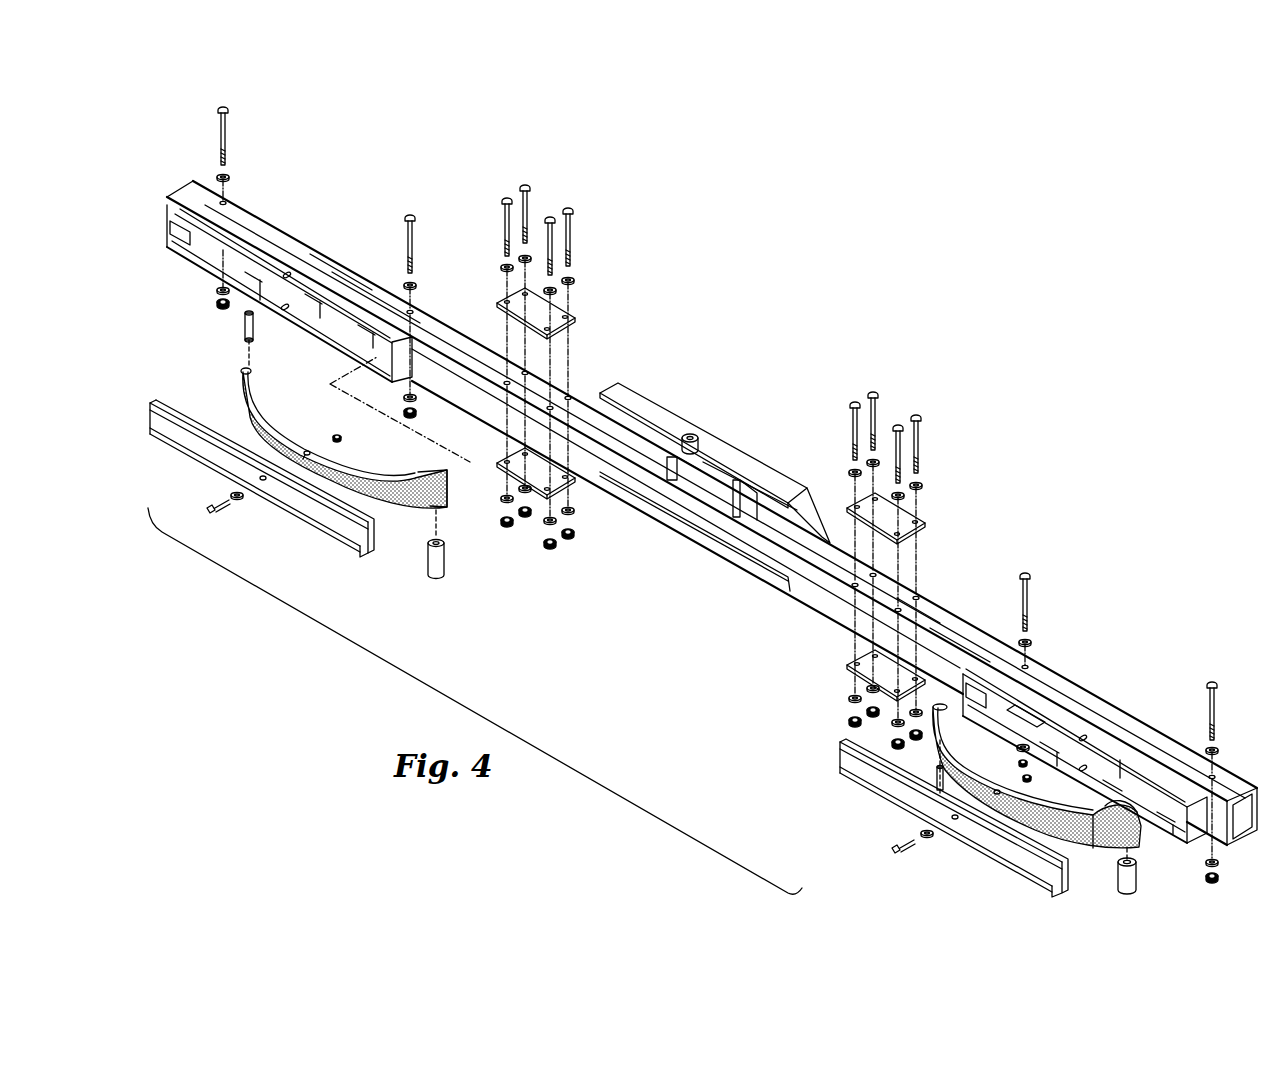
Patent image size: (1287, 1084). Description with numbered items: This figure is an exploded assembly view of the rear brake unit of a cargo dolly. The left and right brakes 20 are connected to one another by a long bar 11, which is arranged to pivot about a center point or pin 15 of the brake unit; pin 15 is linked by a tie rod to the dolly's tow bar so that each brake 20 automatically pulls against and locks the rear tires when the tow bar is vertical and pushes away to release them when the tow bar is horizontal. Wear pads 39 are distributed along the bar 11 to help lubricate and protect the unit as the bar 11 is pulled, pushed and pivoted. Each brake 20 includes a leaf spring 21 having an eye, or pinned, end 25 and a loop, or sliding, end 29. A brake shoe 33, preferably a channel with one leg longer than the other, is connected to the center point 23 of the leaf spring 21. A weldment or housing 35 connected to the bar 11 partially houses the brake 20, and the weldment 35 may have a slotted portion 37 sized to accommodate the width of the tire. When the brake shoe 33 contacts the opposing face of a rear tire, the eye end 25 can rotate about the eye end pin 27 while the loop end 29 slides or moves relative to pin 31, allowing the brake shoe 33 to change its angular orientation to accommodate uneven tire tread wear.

The bar 11 is at (948, 610).
The pin 15 is at (700, 434).
The brake 20 is at (404, 619).
The leaf spring 21 is at (267, 443).
The center point 23 is at (307, 455).
The eye end 25 is at (240, 367).
The eye end pin 27 is at (240, 326).
The loop end 29 is at (448, 508).
The pin 31 is at (427, 575).
The brake shoe 33 is at (328, 518).
The weldment 35 is at (1070, 730).
The slotted portion 37 is at (1027, 713).
The wear pads 39 is at (575, 318).